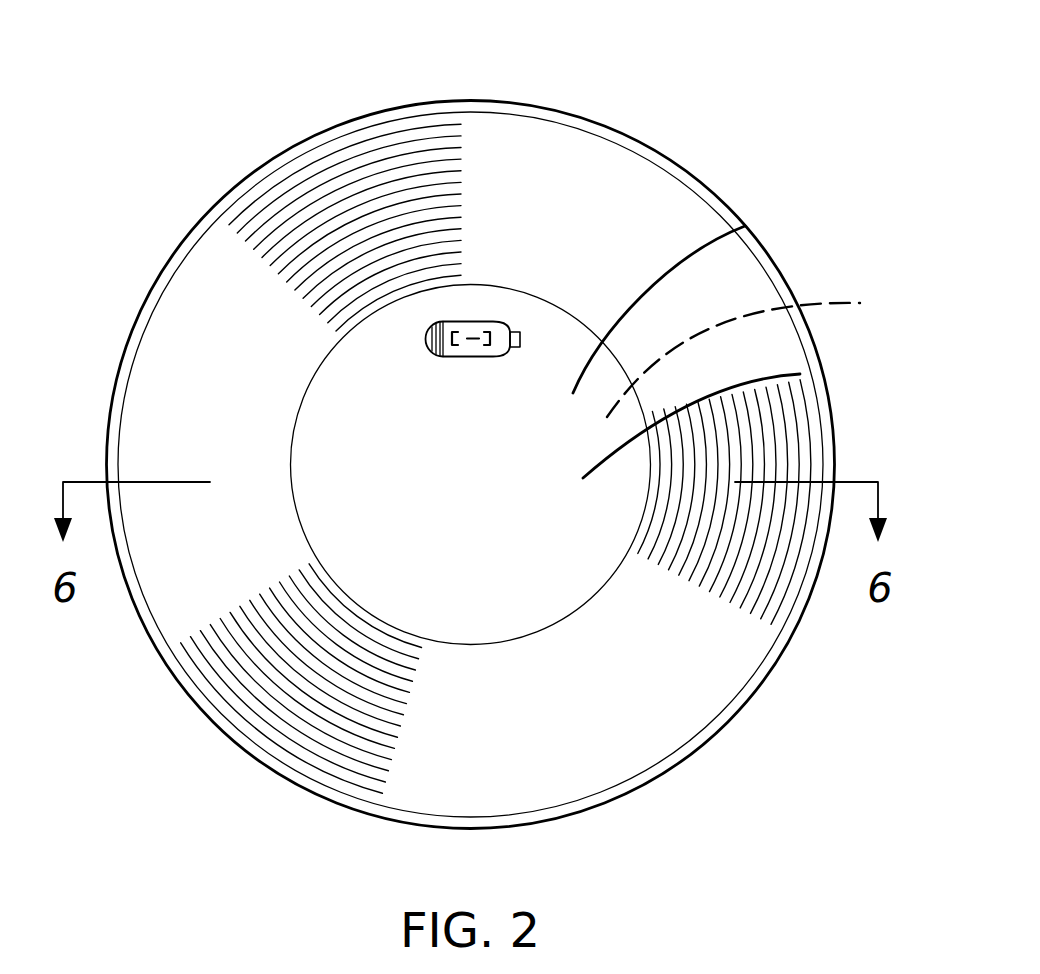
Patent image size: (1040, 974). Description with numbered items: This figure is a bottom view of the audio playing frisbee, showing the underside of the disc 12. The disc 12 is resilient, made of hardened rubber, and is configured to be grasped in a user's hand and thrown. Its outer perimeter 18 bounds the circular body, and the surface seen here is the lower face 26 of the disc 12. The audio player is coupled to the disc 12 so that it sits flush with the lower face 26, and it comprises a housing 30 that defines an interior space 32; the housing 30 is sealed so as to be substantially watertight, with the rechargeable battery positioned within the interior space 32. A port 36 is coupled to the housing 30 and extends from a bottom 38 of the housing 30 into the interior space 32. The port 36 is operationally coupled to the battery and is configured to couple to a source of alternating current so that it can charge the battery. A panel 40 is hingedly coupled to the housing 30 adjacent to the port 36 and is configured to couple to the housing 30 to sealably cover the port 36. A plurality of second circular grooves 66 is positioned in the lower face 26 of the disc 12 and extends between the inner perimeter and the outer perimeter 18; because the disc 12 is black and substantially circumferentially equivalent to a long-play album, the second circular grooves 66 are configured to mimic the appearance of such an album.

The disc 12 is at (527, 132).
The outer perimeter 18 is at (731, 210).
The lower face 26 is at (567, 718).
The housing 30 is at (745, 226).
The interior space 32 is at (758, 350).
The port 36 is at (473, 327).
The bottom 38 is at (800, 374).
The panel 40 is at (518, 333).
The second circular grooves 66 is at (327, 733).